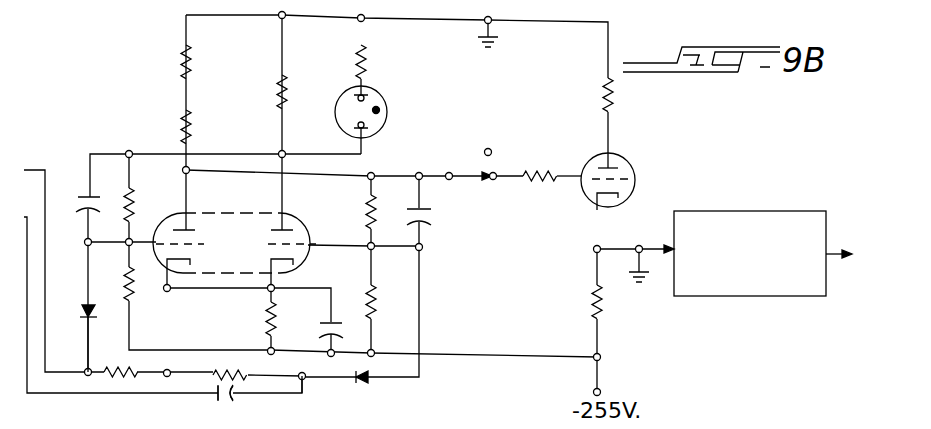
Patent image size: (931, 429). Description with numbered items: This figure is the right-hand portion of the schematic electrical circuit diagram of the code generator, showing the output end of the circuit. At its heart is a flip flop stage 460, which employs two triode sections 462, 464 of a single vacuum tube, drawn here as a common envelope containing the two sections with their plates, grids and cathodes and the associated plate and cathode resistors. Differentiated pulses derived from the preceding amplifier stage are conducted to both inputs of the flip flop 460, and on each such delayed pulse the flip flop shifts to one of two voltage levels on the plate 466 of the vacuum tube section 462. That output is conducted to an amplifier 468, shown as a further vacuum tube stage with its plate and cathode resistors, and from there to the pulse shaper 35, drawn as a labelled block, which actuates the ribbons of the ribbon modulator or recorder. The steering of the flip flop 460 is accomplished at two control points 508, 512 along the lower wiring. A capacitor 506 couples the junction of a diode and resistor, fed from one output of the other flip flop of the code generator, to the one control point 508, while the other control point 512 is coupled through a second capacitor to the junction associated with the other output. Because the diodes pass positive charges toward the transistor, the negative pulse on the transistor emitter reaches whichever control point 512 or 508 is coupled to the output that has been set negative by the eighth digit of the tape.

The flip flop stage 460 is at (164, 40).
The triode section 462 is at (161, 258).
The triode section 464 is at (297, 224).
The plate 466 is at (189, 231).
The amplifier 468 is at (686, 151).
The capacitor 506 is at (233, 399).
The control point 508 is at (305, 379).
The control point 512 is at (86, 369).
The pulse shaper 35 is at (740, 288).